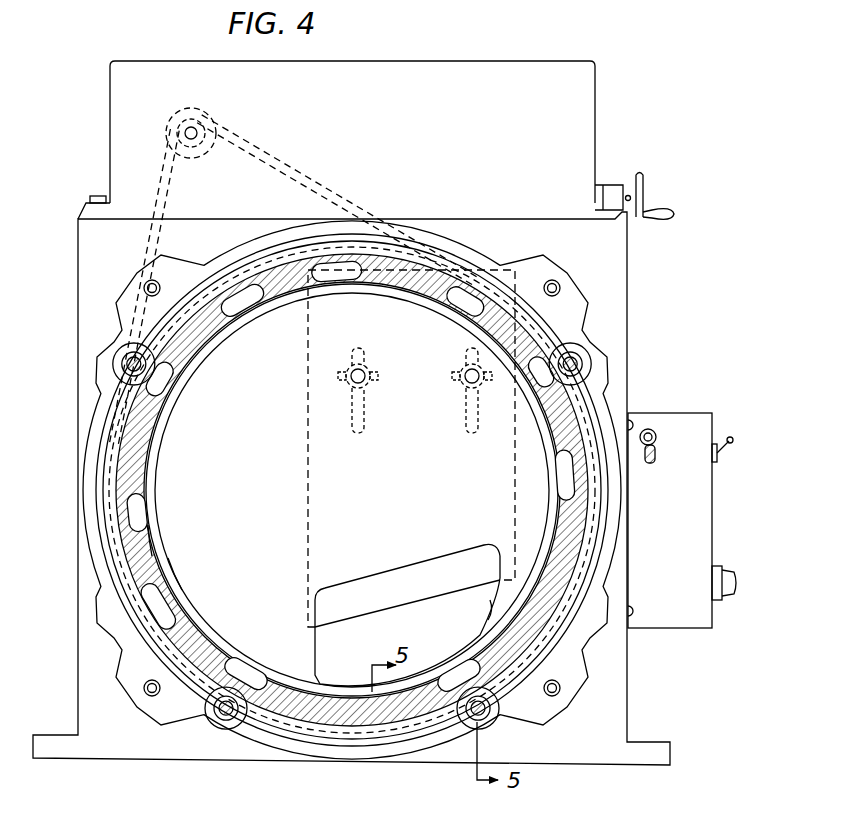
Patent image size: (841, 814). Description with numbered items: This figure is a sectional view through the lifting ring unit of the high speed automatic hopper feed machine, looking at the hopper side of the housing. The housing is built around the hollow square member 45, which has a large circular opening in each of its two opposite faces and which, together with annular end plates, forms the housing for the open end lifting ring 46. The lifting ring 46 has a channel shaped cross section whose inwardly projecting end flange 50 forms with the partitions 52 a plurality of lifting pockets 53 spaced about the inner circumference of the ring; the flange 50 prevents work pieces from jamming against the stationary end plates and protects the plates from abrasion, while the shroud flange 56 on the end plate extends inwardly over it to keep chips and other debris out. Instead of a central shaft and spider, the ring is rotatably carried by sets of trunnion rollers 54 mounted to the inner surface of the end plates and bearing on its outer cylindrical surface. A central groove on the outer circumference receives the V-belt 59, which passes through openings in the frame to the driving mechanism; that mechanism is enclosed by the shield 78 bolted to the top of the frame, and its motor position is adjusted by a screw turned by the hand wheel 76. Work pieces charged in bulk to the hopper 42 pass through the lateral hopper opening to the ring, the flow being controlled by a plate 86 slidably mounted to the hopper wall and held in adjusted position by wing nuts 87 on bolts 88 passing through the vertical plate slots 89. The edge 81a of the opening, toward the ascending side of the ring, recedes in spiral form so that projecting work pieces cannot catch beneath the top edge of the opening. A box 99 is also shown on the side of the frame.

The hopper 42 is at (246, 442).
The hollow square member 45 is at (615, 695).
The lifting ring 46 is at (318, 722).
The end flange 50 is at (148, 537).
The partition 52 is at (172, 573).
The lifting pocket 53 is at (176, 621).
The trunnion roller 54 is at (233, 716).
The shroud flange 56 is at (153, 521).
The V-belt 59 is at (325, 186).
The hand wheel 76 is at (640, 177).
The shield 78 is at (587, 145).
The edge of the opening 81a is at (489, 607).
The plate 86 is at (392, 592).
The wing nut 87 is at (380, 372).
The bolt 88 is at (368, 362).
The vertical plate slot 89 is at (362, 412).
The control box 99 is at (681, 411).